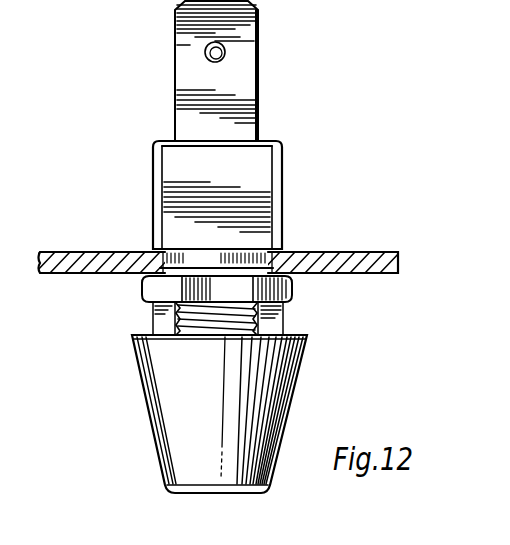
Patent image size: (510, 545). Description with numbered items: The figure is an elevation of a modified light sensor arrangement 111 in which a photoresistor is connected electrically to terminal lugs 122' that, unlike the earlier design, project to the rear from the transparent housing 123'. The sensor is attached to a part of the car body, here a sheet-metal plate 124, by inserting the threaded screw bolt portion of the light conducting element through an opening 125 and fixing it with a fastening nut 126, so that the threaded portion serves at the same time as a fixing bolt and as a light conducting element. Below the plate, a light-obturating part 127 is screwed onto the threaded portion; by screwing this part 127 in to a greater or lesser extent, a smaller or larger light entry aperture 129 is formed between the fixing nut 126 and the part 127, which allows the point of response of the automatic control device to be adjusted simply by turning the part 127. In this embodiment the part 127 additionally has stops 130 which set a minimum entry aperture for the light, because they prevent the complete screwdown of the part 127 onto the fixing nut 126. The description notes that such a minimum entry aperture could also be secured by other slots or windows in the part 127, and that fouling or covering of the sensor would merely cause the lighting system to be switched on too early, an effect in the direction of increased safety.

The fixture assembly 111 is at (125, 201).
The terminal lugs 122' is at (251, 71).
The housing 123' is at (249, 195).
The sheet-metal plate 124 is at (352, 256).
The opening 125 is at (140, 278).
The fastening nut 126 is at (290, 290).
The light-obturating part 127 is at (250, 380).
The light entry aperture 129 is at (168, 346).
The stops 130 is at (156, 321).